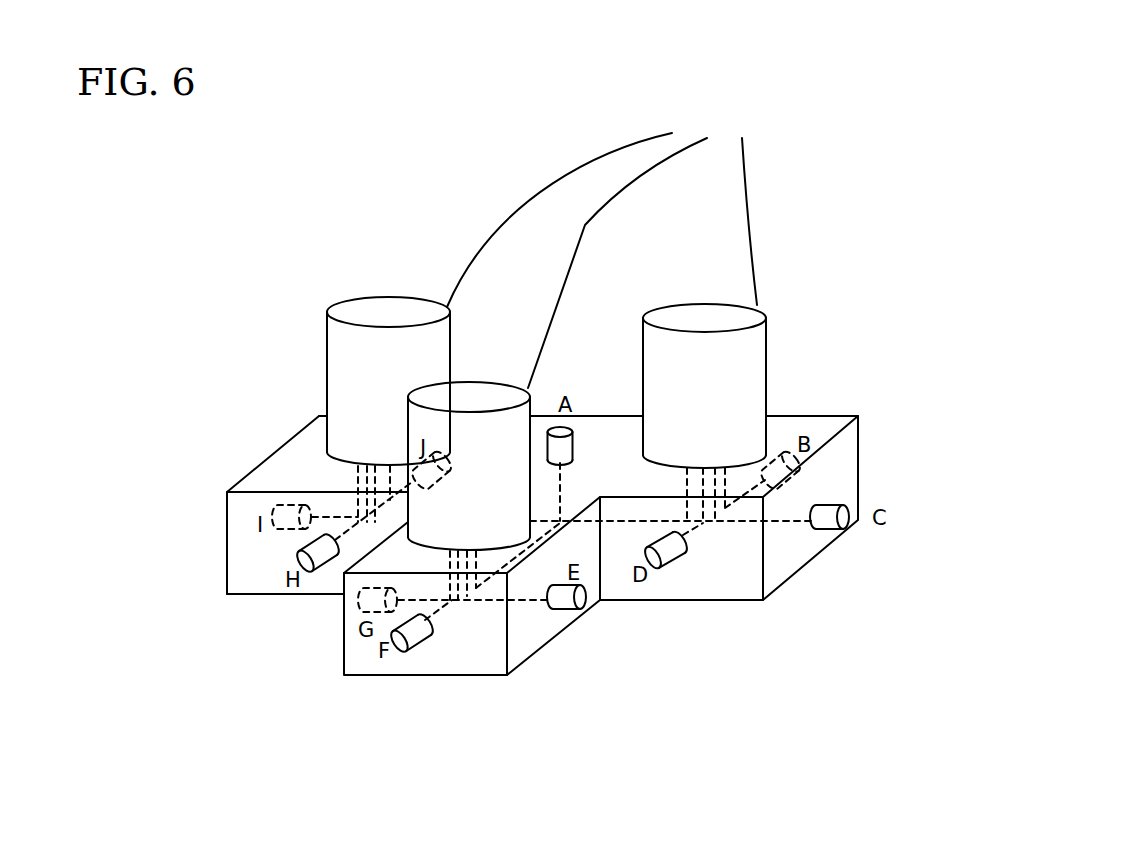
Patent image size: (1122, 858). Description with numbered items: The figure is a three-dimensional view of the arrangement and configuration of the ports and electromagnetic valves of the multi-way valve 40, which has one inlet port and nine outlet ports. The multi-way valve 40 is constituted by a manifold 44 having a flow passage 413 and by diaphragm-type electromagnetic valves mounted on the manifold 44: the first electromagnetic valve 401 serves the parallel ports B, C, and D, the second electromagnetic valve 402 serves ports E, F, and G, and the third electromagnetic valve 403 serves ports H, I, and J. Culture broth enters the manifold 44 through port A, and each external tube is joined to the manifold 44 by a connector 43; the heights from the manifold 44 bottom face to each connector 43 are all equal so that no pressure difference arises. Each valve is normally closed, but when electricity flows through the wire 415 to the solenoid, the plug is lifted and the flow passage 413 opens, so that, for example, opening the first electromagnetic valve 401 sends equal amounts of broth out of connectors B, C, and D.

The multi-way valve 40 is at (578, 559).
The connector 43 is at (567, 612).
The manifold 44 is at (707, 583).
The flow passage 413 is at (799, 520).
The electromagnetic valve SV1 401 is at (763, 378).
The electromagnetic valve SV2 402 is at (478, 380).
The electromagnetic valve SV3 403 is at (333, 305).
The wire 415 is at (753, 223).